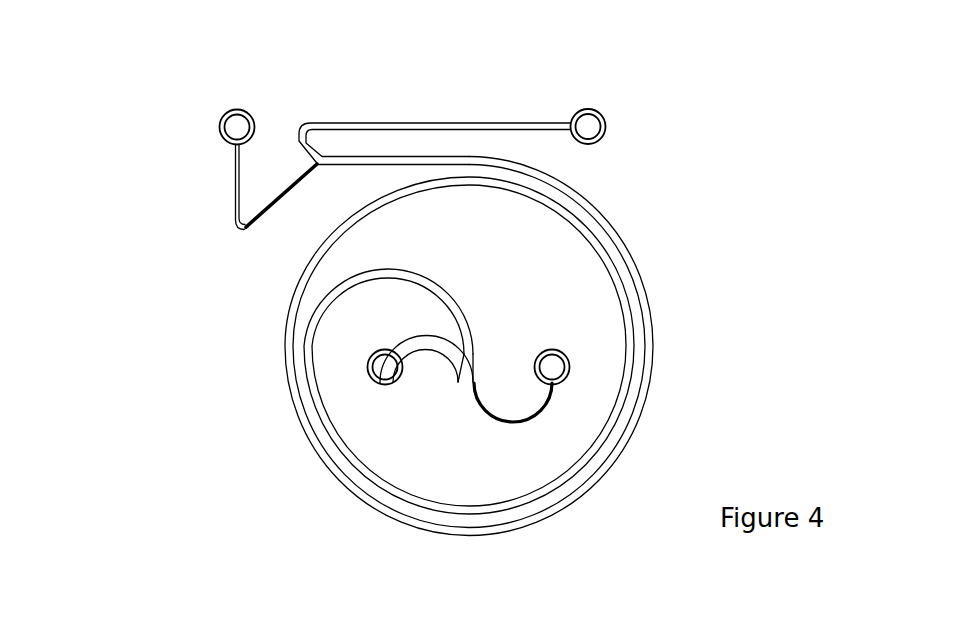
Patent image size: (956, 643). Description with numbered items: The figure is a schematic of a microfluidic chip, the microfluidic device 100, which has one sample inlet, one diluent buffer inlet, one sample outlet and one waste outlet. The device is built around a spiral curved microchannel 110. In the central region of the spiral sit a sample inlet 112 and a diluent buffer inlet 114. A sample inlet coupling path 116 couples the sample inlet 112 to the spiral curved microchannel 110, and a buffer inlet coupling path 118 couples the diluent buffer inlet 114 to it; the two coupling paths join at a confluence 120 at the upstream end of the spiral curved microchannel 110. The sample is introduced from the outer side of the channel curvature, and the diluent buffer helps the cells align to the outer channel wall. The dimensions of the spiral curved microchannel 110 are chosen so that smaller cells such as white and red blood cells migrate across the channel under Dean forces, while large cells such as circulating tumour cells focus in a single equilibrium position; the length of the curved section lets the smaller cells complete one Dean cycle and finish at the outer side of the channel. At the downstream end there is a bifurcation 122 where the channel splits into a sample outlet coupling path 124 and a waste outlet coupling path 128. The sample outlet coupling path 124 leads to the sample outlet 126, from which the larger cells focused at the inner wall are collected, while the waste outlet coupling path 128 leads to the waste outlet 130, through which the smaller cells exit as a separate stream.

The microfluidic device 100 is at (166, 97).
The spiral curved microchannel 110 is at (650, 322).
The sample inlet 112 is at (568, 375).
The diluent buffer inlet 114 is at (367, 367).
The sample inlet coupling path 116 is at (522, 421).
The buffer inlet coupling path 118 is at (407, 415).
The confluence 120 is at (469, 335).
The bifurcation 122 is at (316, 168).
The sample outlet coupling path 124 is at (236, 198).
The sample outlet 126 is at (247, 112).
The waste outlet coupling path 128 is at (403, 121).
The waste outlet 130 is at (601, 114).